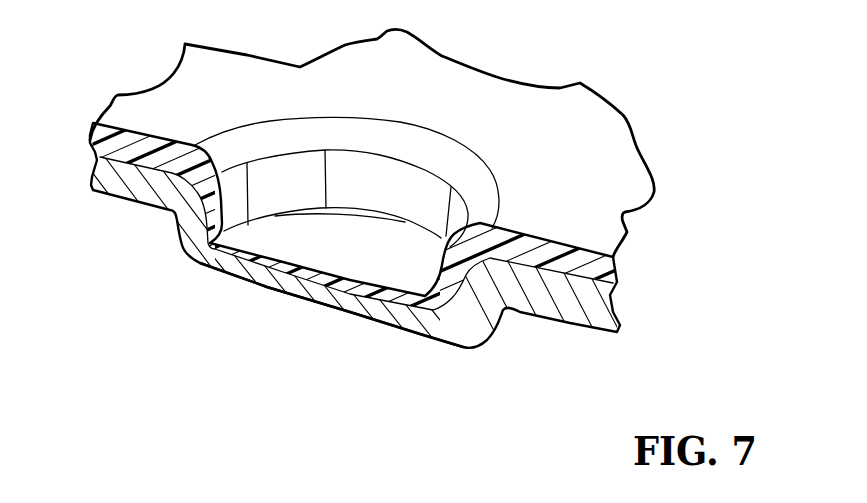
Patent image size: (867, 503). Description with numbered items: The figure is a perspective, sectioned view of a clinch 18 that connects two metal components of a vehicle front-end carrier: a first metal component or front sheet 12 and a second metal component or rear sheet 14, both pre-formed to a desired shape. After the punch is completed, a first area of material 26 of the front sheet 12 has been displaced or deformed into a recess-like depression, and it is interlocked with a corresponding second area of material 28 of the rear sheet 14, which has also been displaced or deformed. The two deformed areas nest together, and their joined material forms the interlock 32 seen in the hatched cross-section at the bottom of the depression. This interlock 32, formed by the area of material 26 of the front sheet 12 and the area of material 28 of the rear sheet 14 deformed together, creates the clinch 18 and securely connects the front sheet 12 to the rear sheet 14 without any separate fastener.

The front sheet 12 is at (622, 168).
The rear sheet 14 is at (574, 328).
The clinch 18 is at (93, 258).
The first area of material 26 is at (368, 232).
The second area of material 28 is at (273, 290).
The interlock 32 is at (447, 322).